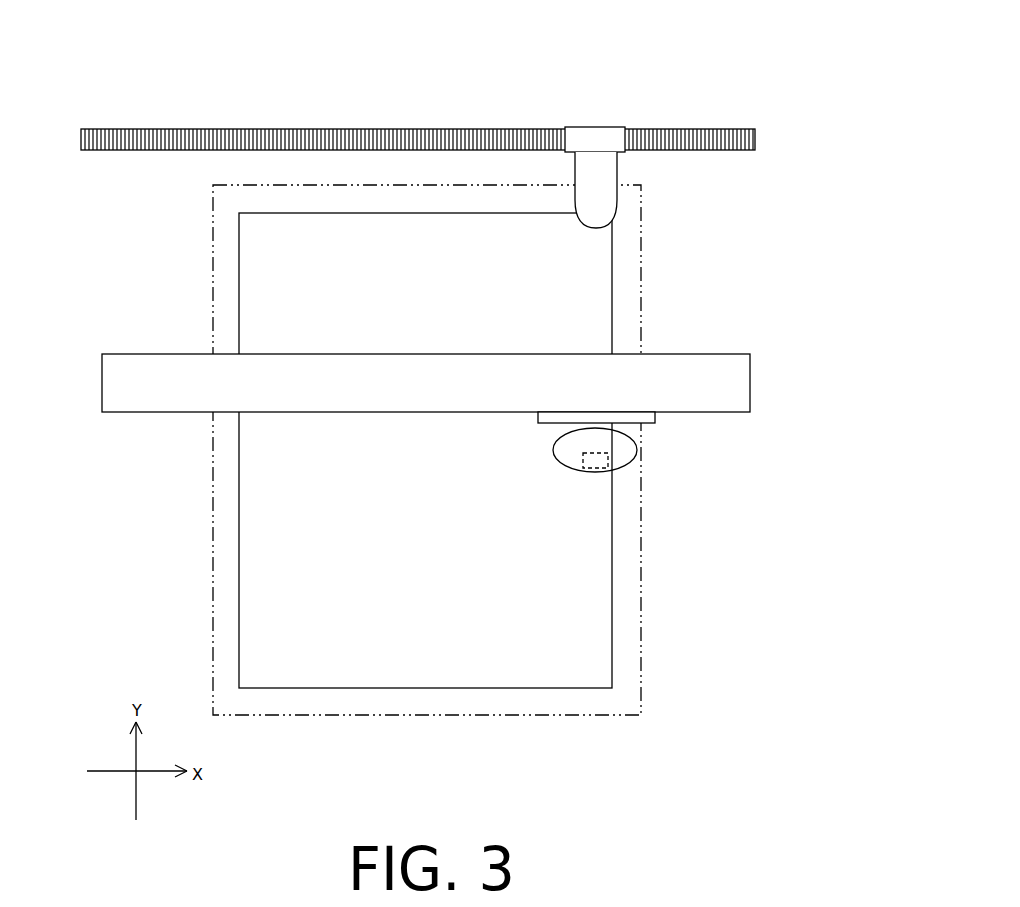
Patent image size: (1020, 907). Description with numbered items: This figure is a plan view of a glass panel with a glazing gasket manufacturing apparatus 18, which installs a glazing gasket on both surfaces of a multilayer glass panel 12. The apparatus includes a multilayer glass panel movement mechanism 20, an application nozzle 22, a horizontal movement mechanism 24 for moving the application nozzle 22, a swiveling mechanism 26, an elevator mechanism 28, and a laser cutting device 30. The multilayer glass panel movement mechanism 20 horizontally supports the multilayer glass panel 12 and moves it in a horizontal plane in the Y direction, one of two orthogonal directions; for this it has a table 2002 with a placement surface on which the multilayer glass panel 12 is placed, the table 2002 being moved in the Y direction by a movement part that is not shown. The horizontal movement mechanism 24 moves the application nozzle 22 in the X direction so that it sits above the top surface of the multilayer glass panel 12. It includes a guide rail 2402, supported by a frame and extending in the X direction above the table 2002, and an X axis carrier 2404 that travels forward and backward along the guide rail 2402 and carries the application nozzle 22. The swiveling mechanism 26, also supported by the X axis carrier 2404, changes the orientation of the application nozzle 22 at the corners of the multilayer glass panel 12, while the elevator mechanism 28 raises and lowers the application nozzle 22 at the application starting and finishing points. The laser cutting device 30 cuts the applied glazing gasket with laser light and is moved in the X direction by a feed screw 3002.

The multilayer glass panel 12 is at (612, 590).
The glass panel with a glazing gasket manufacturing apparatus 18 is at (419, 82).
The feed screw 3002 is at (478, 128).
The multilayer glass panel movement mechanism 20 is at (359, 450).
The table 2002 is at (212, 268).
The application nozzle 22 is at (565, 462).
The horizontal movement mechanism 24 is at (435, 335).
The guide rail 2402 is at (697, 354).
The X axis carrier 2404 is at (655, 423).
The swiveling mechanism 26 is at (656, 474).
The elevator mechanism 28 is at (623, 468).
The laser cutting device 30 is at (617, 198).